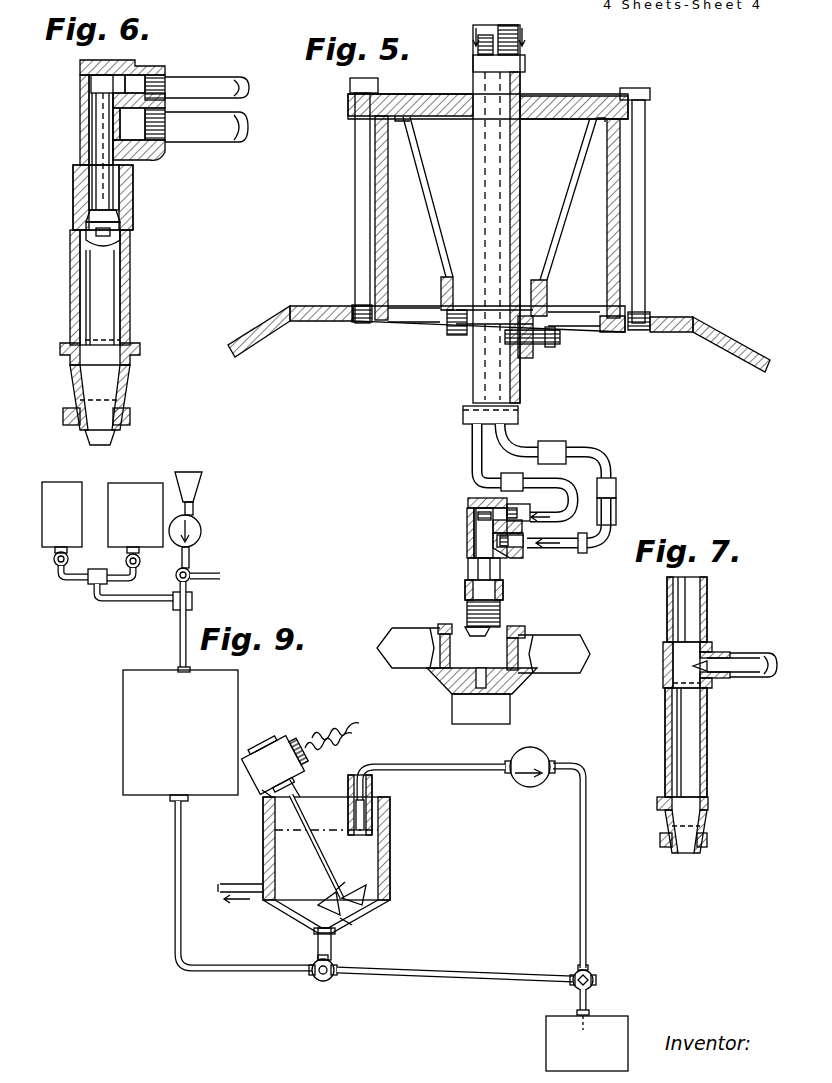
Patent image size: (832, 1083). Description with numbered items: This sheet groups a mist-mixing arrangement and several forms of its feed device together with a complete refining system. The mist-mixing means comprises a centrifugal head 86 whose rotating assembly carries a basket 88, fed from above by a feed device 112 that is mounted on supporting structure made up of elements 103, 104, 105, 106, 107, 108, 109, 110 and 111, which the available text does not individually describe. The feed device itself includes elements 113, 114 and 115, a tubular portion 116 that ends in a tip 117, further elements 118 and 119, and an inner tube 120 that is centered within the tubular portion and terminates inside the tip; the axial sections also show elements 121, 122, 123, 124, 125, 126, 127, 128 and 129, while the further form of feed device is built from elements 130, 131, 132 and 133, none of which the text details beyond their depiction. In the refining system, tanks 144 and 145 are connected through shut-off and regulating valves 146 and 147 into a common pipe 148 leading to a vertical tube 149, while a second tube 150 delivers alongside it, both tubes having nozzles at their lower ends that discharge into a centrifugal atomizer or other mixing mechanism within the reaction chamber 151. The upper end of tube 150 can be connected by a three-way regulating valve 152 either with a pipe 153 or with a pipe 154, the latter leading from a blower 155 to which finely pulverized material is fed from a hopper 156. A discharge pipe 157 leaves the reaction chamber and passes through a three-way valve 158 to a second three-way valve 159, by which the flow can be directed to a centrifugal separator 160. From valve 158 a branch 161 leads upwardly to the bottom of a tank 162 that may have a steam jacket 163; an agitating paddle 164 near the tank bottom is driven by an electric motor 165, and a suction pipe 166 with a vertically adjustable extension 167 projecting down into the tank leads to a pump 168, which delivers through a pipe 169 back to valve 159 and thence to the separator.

In FIG. 5, the head 86 is at (549, 689).
In FIG. 5, the basket 88 is at (523, 628).
In FIG. 5, the cover plate 103 is at (700, 325).
In FIG. 5, the bolt 104 is at (390, 222).
In FIG. 5, the top plate 105 is at (553, 98).
In FIG. 5, the bolt 106 is at (640, 168).
In FIG. 5, the tube 107 is at (513, 172).
In FIG. 5, the set screw 108 is at (556, 345).
In FIG. 5, the conical guide 109 is at (545, 262).
In FIG. 5, the coupling 110 is at (515, 425).
In FIG. 5, the pipe elbow 111 is at (476, 443).
In FIG. 5, the valve body 112 is at (456, 544).
In FIG. 6, the housing 113 is at (82, 96).
In FIG. 5, the housing 113 is at (468, 503).
In FIG. 6, the inlet fitting 114 is at (140, 150).
In FIG. 5, the inlet fitting 114 is at (508, 556).
In FIG. 6, the inlet fitting 115 is at (128, 77).
In FIG. 5, the inlet fitting 115 is at (515, 510).
In FIG. 6, the tubular portion 116 is at (82, 156).
In FIG. 5, the tubular portion 116 is at (468, 568).
In FIG. 6, the tip 117 is at (78, 184).
In FIG. 5, the tip 117 is at (465, 590).
In FIG. 6, the cap 118 is at (92, 82).
In FIG. 5, the cap 118 is at (478, 497).
In FIG. 6, the tubes 119 is at (165, 80).
In FIG. 6, the tube 120 is at (90, 126).
In FIG. 5, the tube 120 is at (468, 525).
In FIG. 6, the plug 121 is at (122, 240).
In FIG. 6, the seat 122 is at (112, 218).
In FIG. 5, the coupling 123 is at (617, 475).
In FIG. 5, the pipe 124 is at (620, 500).
In FIG. 6, the barrel 125 is at (130, 280).
In FIG. 6, the collar 126 is at (128, 380).
In FIG. 7, the collar 126 is at (700, 818).
In FIG. 6, the collar 127 is at (118, 430).
In FIG. 7, the collar 127 is at (700, 848).
In FIG. 6, the tip 128 is at (92, 440).
In FIG. 6, the nozzle 129 is at (105, 405).
In FIG. 7, the tube 130 is at (707, 590).
In FIG. 7, the fitting 131 is at (705, 642).
In FIG. 7, the tube 132 is at (708, 731).
In FIG. 7, the side tube 133 is at (745, 652).
In FIG. 9, the tank 144 is at (42, 520).
In FIG. 9, the tank 145 is at (125, 498).
In FIG. 9, the shut-off and regulating valve 146 is at (54, 562).
In FIG. 9, the shut-off and regulating valve 147 is at (142, 565).
In FIG. 9, the common pipe 148 is at (132, 600).
In FIG. 9, the vertical tube 149 is at (180, 633).
In FIG. 9, the tube 150 is at (190, 588).
In FIG. 9, the reaction chamber 151 is at (123, 736).
In FIG. 9, the three-way regulating valve 152 is at (192, 572).
In FIG. 9, the pipe 153 is at (222, 577).
In FIG. 9, the pipe 154 is at (192, 555).
In FIG. 9, the blower 155 is at (200, 525).
In FIG. 9, the hopper 156 is at (195, 482).
In FIG. 9, the discharge pipe 157 is at (174, 892).
In FIG. 9, the three-way valve 158 is at (337, 962).
In FIG. 9, the three-way valve 159 is at (593, 975).
In FIG. 9, the centrifugal separator 160 is at (600, 1018).
In FIG. 9, the branch 161 is at (317, 946).
In FIG. 9, the tank 162 is at (295, 912).
In FIG. 9, the steam jacket 163 is at (263, 851).
In FIG. 9, the agitating paddle 164 is at (368, 907).
In FIG. 9, the electric motor 165 is at (265, 745).
In FIG. 9, the suction pipe 166 is at (432, 772).
In FIG. 9, the vertically adjustable extension 167 is at (348, 782).
In FIG. 9, the pump 168 is at (548, 754).
In FIG. 9, the pipe 169 is at (590, 884).